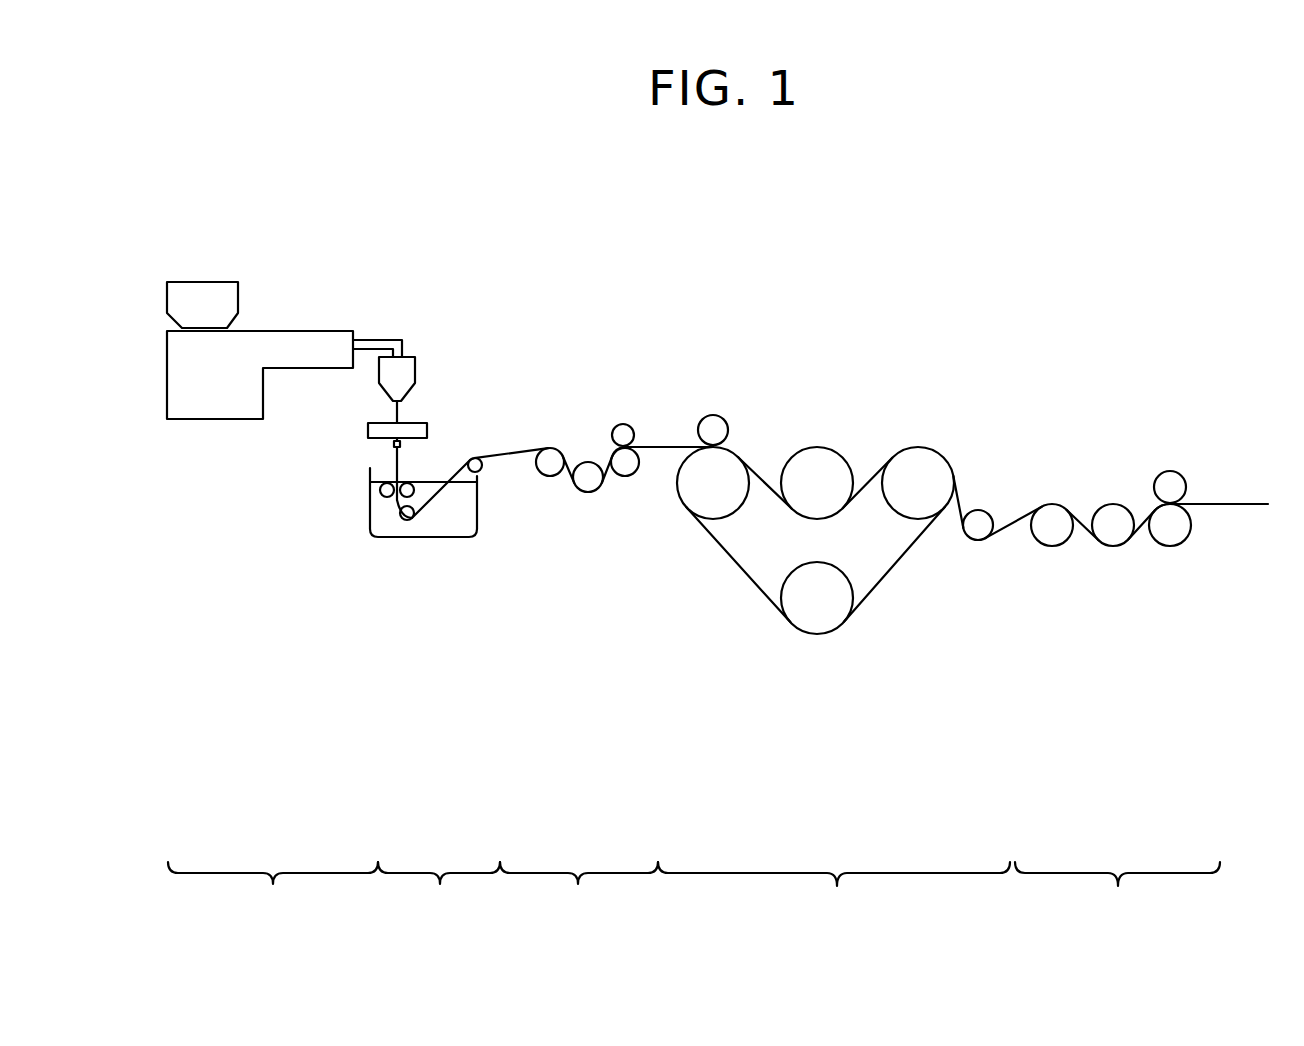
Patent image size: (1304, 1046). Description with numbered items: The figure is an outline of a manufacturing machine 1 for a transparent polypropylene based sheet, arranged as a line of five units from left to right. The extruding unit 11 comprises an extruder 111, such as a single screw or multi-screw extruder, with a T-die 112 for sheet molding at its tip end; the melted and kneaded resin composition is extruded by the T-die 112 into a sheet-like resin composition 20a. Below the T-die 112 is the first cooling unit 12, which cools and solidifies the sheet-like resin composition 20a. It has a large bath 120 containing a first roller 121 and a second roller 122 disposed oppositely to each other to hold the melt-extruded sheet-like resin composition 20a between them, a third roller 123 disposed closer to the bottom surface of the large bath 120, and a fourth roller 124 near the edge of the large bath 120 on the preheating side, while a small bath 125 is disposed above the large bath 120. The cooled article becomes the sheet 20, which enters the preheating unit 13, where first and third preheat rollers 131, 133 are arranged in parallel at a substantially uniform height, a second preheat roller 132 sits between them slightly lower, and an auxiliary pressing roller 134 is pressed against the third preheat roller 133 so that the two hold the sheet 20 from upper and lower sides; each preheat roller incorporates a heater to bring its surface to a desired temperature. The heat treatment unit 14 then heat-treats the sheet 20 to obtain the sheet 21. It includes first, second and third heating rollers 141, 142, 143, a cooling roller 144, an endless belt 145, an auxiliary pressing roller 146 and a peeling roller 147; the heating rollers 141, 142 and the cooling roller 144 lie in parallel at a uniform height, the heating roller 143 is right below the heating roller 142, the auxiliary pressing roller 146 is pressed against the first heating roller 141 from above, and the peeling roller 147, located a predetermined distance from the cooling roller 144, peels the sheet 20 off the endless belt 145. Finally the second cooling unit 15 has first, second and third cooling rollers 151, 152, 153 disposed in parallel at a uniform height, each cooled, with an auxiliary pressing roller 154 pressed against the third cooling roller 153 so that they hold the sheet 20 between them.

The manufacturing machine 1 is at (1190, 233).
The extruding unit 11 is at (273, 894).
The first cooling unit 12 is at (439, 894).
The preheating unit 13 is at (579, 894).
The heat treatment unit 14 is at (834, 894).
The second cooling unit 15 is at (1117, 894).
The sheet 20 is at (515, 450).
The sheet-like resin composition 20a is at (398, 407).
The sheet 21 is at (1257, 503).
The extruder 111 is at (307, 340).
The T-die 112 is at (390, 378).
The large bath 120 is at (455, 538).
The first roller 121 is at (387, 500).
The second roller 122 is at (407, 490).
The third roller 123 is at (407, 520).
The fourth roller 124 is at (475, 470).
The small bath 125 is at (415, 417).
The first preheat roller 131 is at (552, 460).
The second preheat roller 132 is at (588, 467).
The third preheat roller 133 is at (623, 473).
The auxiliary pressing roller 134 is at (623, 427).
The first heating roller 141 is at (733, 470).
The second heating roller 142 is at (832, 465).
The third heating roller 143 is at (815, 625).
The cooling roller 144 is at (927, 465).
The endless belt 145 is at (743, 577).
The auxiliary pressing roller 146 is at (713, 423).
The peeling roller 147 is at (980, 520).
The first cooling roller 151 is at (1050, 538).
The second cooling roller 152 is at (1112, 537).
The third cooling roller 153 is at (1172, 538).
The auxiliary pressing roller 154 is at (1172, 485).